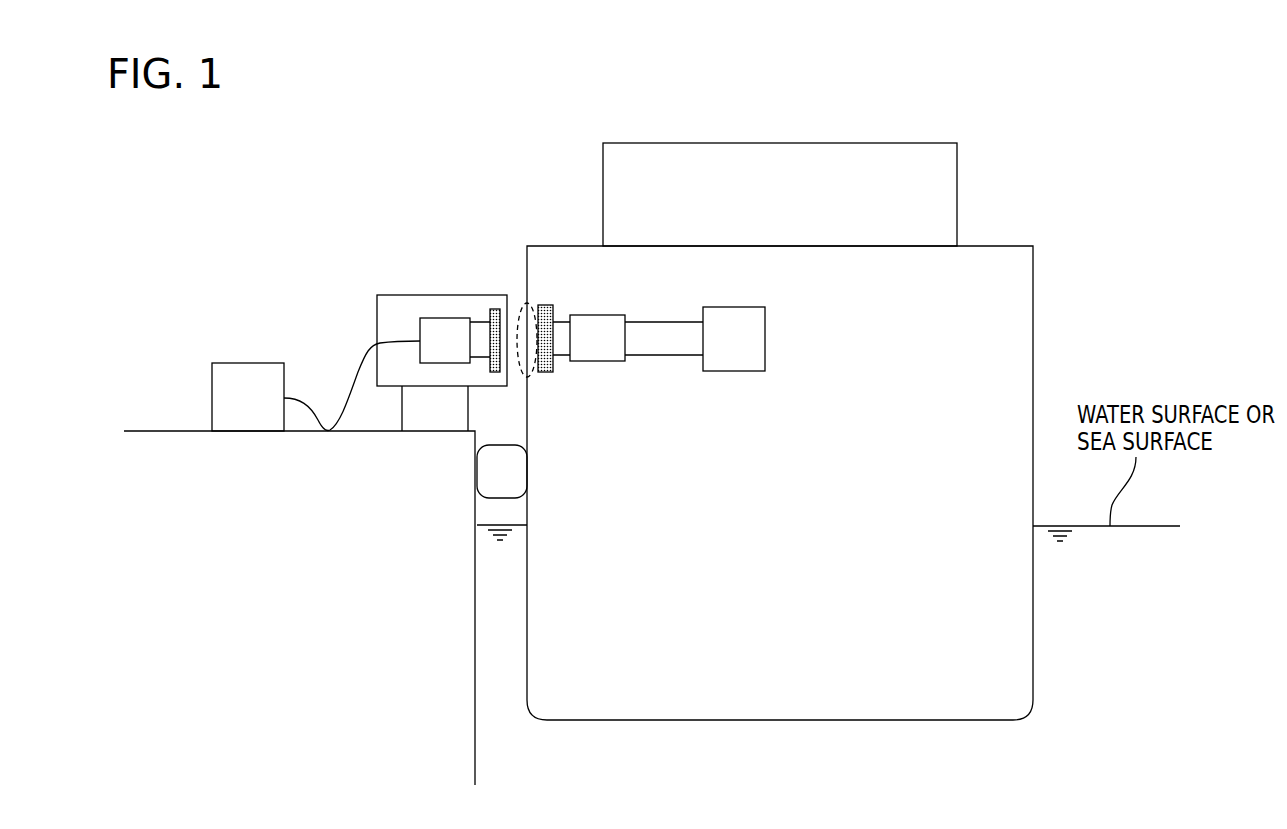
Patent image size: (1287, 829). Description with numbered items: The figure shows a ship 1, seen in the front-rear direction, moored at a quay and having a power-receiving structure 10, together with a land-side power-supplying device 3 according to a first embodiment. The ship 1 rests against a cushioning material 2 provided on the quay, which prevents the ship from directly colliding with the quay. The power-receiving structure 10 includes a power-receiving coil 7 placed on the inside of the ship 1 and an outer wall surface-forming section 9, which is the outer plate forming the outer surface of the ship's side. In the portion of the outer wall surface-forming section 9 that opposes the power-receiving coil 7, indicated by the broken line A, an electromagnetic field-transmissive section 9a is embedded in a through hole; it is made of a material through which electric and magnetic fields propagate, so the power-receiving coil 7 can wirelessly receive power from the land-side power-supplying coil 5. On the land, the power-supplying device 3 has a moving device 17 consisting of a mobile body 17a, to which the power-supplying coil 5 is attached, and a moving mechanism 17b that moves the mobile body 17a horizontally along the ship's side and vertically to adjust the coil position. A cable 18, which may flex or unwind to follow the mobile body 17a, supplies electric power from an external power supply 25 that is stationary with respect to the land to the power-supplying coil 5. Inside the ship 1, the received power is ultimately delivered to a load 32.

The ship 1 is at (1068, 220).
The cushioning material 2 is at (505, 472).
The power-supplying device 3 is at (299, 509).
The power-supplying coil 5 is at (490, 310).
The power-receiving coil 7 is at (545, 305).
The outer wall surface-forming section 9 is at (527, 262).
The electromagnetic field-transmissive section 9a is at (525, 322).
The power-receiving structure 10 is at (504, 174).
The moving device 17 is at (395, 357).
The mobile body 17a is at (410, 295).
The moving mechanism 17b is at (430, 421).
The cable 18 is at (352, 373).
The external power supply 25 is at (248, 397).
The load 32 is at (695, 339).
The broken line A is at (523, 333).